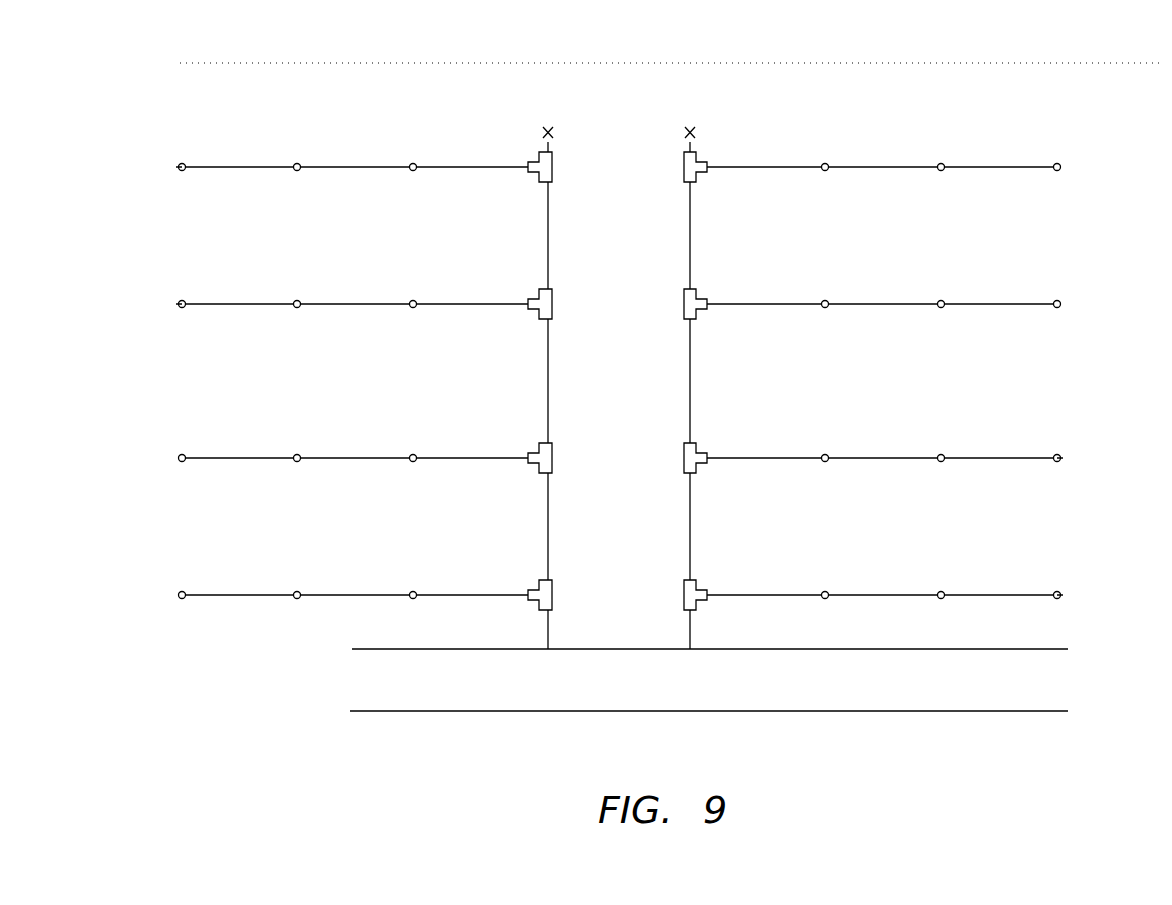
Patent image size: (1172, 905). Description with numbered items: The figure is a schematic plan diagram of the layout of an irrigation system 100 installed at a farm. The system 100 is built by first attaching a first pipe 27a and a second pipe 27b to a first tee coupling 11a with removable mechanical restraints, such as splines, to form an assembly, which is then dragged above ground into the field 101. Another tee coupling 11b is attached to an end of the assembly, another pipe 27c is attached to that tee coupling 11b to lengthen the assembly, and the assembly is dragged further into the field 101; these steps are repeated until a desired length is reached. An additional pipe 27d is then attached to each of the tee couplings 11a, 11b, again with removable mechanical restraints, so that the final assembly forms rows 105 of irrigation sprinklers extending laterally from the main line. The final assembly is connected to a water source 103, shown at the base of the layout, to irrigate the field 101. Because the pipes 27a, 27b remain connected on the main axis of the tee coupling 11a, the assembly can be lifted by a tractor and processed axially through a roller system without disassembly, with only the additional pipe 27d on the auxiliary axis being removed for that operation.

The irrigation system 100 is at (796, 128).
The field 101 is at (1073, 68).
The water source 103 is at (663, 692).
The rows of irrigation sprinklers 105 is at (176, 170).
The first pipe 27a is at (689, 233).
The second pipe 27b is at (689, 394).
The another pipe 27c is at (689, 540).
The additional pipe 27d is at (448, 168).
The first tee coupling 11a is at (684, 303).
The another tee coupling 11b is at (684, 457).